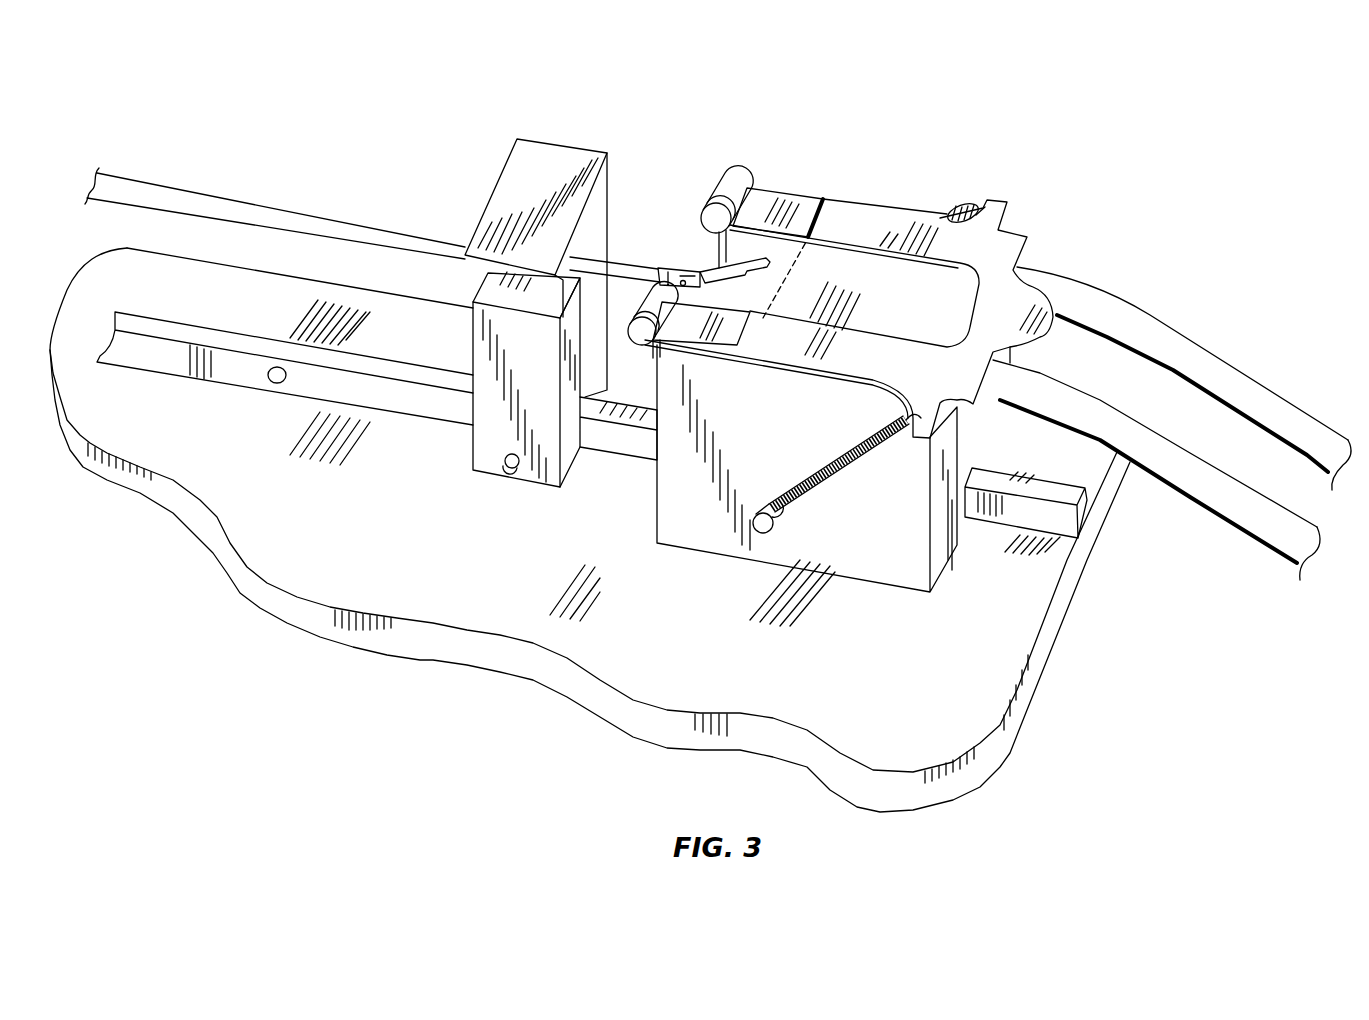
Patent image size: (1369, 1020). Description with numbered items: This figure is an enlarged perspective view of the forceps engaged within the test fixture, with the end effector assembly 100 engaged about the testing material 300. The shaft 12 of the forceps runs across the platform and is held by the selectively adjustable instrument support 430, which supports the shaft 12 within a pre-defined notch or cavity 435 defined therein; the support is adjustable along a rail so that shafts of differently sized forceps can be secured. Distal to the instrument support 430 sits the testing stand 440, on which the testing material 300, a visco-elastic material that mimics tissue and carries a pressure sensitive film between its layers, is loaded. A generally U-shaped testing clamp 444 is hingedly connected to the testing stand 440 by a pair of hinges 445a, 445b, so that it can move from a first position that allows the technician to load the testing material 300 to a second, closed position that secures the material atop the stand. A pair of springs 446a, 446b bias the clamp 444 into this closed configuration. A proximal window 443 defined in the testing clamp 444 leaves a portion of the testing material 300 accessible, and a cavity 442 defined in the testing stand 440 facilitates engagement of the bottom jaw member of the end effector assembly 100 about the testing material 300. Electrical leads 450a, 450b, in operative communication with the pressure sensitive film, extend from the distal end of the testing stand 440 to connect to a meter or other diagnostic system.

The shaft 12 is at (163, 193).
The end effector assembly 100 is at (708, 263).
The testing material 300 is at (823, 282).
The instrument support 430 is at (547, 155).
The cavity 435 is at (483, 287).
The testing stand 440 is at (871, 545).
The cavity 442 is at (751, 253).
The proximal window 443 is at (971, 303).
The testing clamp 444 is at (1010, 243).
The hinge 445a is at (793, 195).
The hinge 445b is at (690, 320).
The spring 446a is at (967, 202).
The spring 446b is at (813, 485).
The electrical lead 450a is at (1247, 387).
The electrical lead 450b is at (1230, 507).